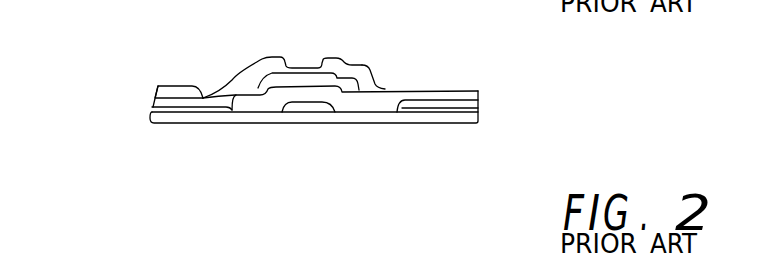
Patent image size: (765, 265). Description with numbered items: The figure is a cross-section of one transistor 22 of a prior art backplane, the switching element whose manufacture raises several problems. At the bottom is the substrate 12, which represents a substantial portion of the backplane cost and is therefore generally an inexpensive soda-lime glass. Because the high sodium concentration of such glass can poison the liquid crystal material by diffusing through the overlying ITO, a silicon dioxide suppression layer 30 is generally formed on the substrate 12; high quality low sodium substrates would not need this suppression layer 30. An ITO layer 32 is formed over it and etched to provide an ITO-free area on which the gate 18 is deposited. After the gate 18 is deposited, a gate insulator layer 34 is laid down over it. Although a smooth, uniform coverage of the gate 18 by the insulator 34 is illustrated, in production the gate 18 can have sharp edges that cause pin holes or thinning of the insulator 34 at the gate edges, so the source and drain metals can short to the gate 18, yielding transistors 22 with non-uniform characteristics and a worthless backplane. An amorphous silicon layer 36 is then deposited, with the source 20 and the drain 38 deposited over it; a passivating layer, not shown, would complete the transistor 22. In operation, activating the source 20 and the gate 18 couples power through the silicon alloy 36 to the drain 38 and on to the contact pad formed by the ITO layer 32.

The substrate 12 is at (321, 163).
The gate 18 is at (323, 105).
The source 20 is at (380, 83).
The transistor 22 is at (315, 50).
The SiO2 suppression layer 30 is at (448, 118).
The ITO layer 32 is at (153, 106).
The gate insulator layer 34 is at (433, 90).
The amorphous silicon layer 36 is at (300, 66).
The drain 38 is at (240, 70).